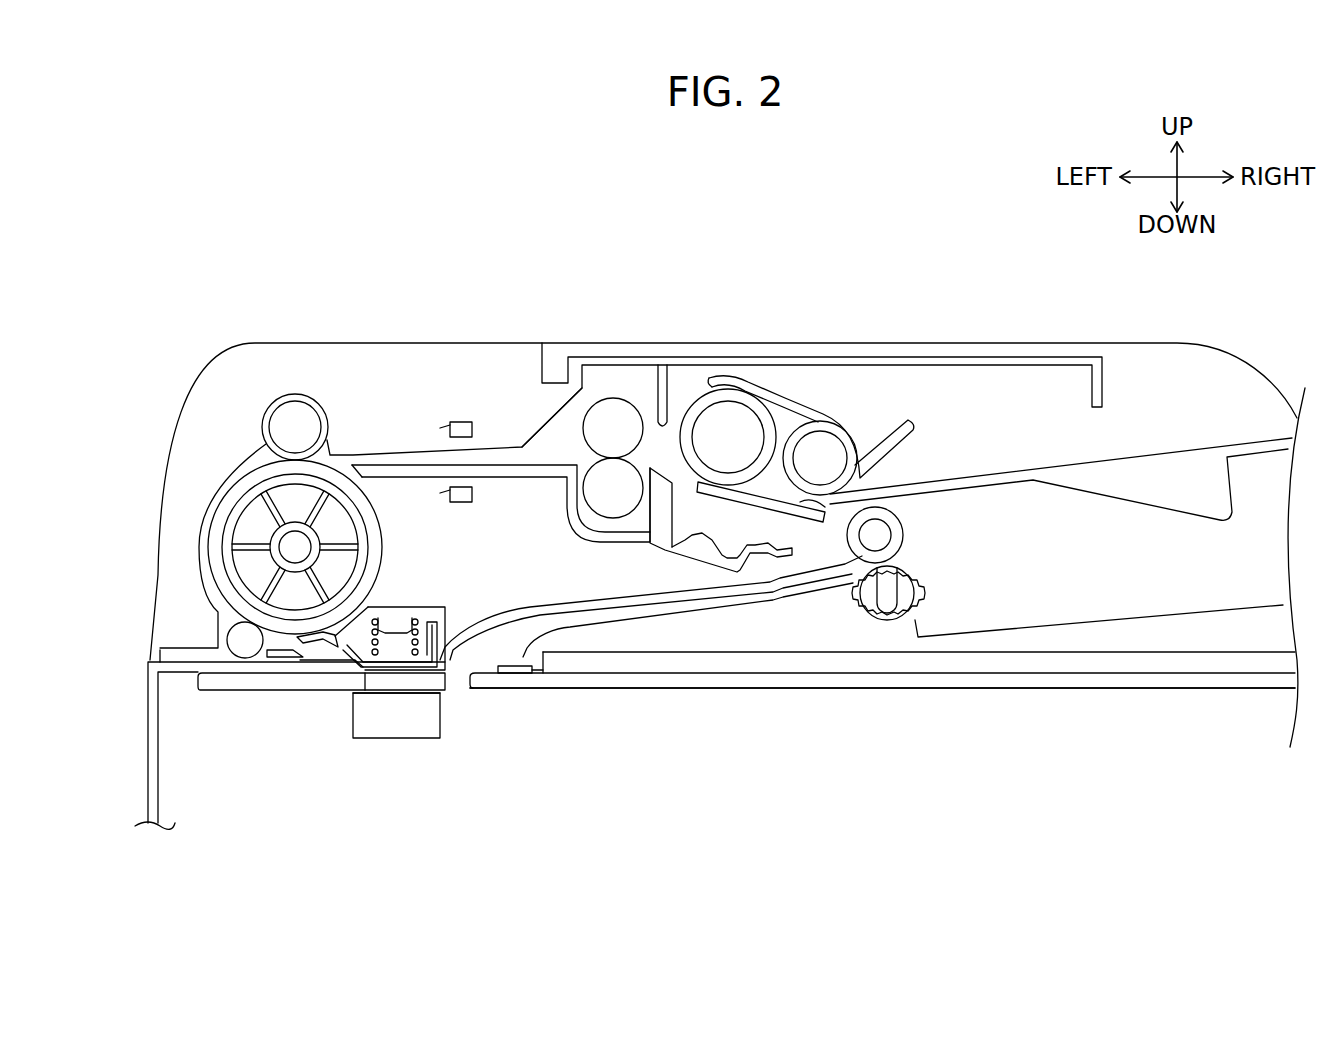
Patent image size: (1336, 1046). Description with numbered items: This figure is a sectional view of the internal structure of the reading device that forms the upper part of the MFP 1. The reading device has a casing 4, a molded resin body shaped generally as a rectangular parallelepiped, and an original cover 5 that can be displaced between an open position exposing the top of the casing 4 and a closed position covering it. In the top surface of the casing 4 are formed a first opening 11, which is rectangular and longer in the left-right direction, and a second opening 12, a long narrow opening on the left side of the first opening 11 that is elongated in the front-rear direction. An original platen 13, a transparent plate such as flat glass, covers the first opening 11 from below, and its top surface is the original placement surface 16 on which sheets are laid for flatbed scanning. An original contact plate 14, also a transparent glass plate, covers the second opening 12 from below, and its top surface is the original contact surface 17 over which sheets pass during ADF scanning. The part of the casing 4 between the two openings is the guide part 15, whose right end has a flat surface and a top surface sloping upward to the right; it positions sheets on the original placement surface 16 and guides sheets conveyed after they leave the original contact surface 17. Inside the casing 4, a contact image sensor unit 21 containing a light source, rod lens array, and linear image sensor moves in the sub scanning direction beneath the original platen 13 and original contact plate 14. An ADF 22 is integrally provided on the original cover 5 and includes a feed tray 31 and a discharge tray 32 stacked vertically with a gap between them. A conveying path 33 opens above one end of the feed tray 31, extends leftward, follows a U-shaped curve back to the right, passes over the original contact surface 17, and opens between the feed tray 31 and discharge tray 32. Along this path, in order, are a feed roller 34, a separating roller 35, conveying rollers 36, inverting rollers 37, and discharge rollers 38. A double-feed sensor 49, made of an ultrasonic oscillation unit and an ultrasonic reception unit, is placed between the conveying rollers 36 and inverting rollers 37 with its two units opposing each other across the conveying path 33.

The MFP 1 is at (795, 851).
The casing 4 is at (148, 755).
The original cover 5 is at (396, 343).
The first opening 11 is at (547, 673).
The second opening 12 is at (363, 673).
The original platen 13 is at (707, 685).
The original contact plate 14 is at (257, 683).
The guide part 15 is at (460, 685).
The original placement surface 16 is at (593, 670).
The original contact surface 17 is at (445, 632).
The contact image sensor unit 21 is at (413, 740).
The ADF 22 is at (550, 437).
The feed tray 31 is at (1160, 452).
The discharge tray 32 is at (1158, 612).
The conveying path 33 is at (205, 522).
The feed roller 34 is at (830, 432).
The separating roller 35 is at (743, 398).
The conveying rollers 36 is at (630, 480).
The inverting rollers 37 is at (245, 640).
The discharge rollers 38 is at (920, 570).
The double-feed sensor 49 is at (440, 428).